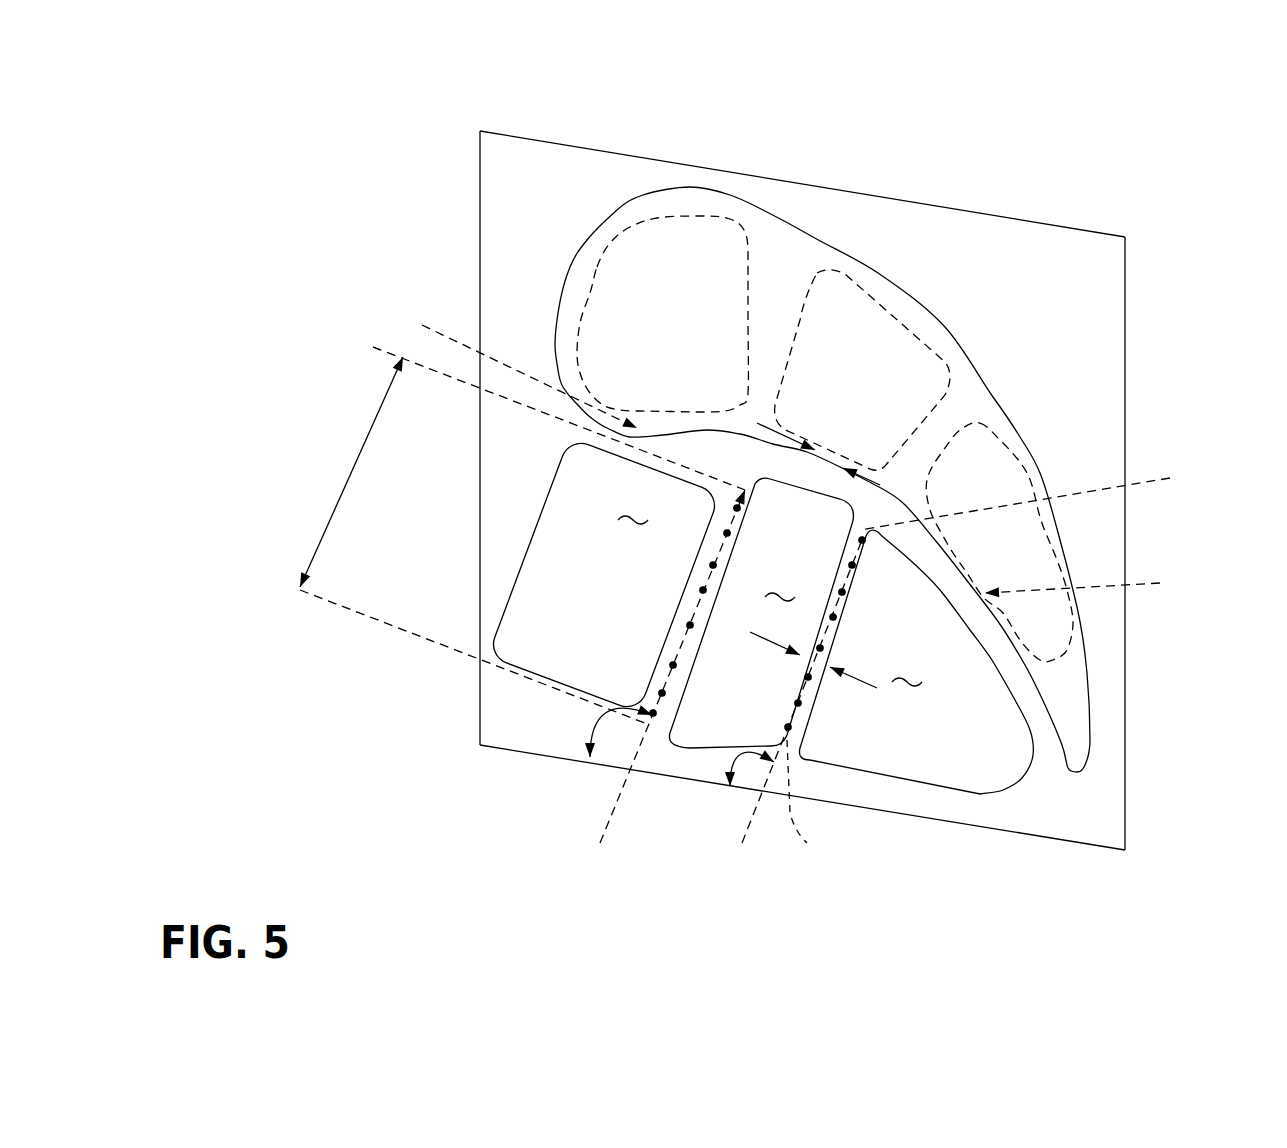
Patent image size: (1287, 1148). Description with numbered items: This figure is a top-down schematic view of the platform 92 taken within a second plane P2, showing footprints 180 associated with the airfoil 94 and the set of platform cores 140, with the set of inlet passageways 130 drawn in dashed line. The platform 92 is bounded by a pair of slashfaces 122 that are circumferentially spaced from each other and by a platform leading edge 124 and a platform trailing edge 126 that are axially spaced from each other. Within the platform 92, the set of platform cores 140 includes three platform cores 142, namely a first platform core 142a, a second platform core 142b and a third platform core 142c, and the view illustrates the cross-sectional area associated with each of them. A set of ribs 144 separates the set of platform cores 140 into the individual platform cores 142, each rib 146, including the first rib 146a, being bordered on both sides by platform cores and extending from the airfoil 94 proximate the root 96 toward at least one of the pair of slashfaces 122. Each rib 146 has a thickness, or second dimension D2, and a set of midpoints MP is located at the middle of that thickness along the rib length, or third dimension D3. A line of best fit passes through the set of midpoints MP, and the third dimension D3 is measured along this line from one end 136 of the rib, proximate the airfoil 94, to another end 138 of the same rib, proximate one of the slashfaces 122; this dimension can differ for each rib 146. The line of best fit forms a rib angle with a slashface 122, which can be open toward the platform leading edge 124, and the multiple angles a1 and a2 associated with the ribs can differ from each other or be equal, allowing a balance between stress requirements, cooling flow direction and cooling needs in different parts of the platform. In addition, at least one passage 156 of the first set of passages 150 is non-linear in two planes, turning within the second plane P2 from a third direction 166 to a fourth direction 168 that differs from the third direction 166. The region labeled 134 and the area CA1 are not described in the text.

The slashfaces 122 is at (578, 146).
The platform leading edge 124 is at (478, 723).
The platform trailing edge 126 is at (1132, 773).
The second plane P2 is at (1130, 70).
The platform 92 is at (987, 247).
The airfoil 94 is at (797, 283).
The root 96 is at (1018, 660).
The set of inlet passageways 130 is at (597, 263).
The aft cavity outline 134 is at (1030, 345).
The one end of rib 136 is at (1039, 495).
The another end of rib 138 is at (808, 804).
The set of platform cores 140 is at (568, 557).
The platform cores 142 is at (510, 640).
The first platform core 142a is at (604, 575).
The second platform core 142b is at (703, 700).
The third platform core 142c is at (870, 740).
The set of ribs 144 is at (673, 637).
The rib 146 is at (817, 663).
The first rib 146a is at (677, 680).
The first set of passages 150 is at (507, 368).
The passage 156 is at (1095, 581).
The third direction 166 is at (1000, 610).
The fourth direction 168 is at (937, 633).
The footprints 180 is at (1020, 422).
The set of midpoints MP is at (843, 593).
The second dimension D2 is at (798, 651).
The third dimension D3 is at (522, 536).
The cross-sectional area CA1 is at (839, 461).
The rib angle alpha 1 a1 is at (618, 731).
The rib angle alpha 2 a2 is at (745, 767).